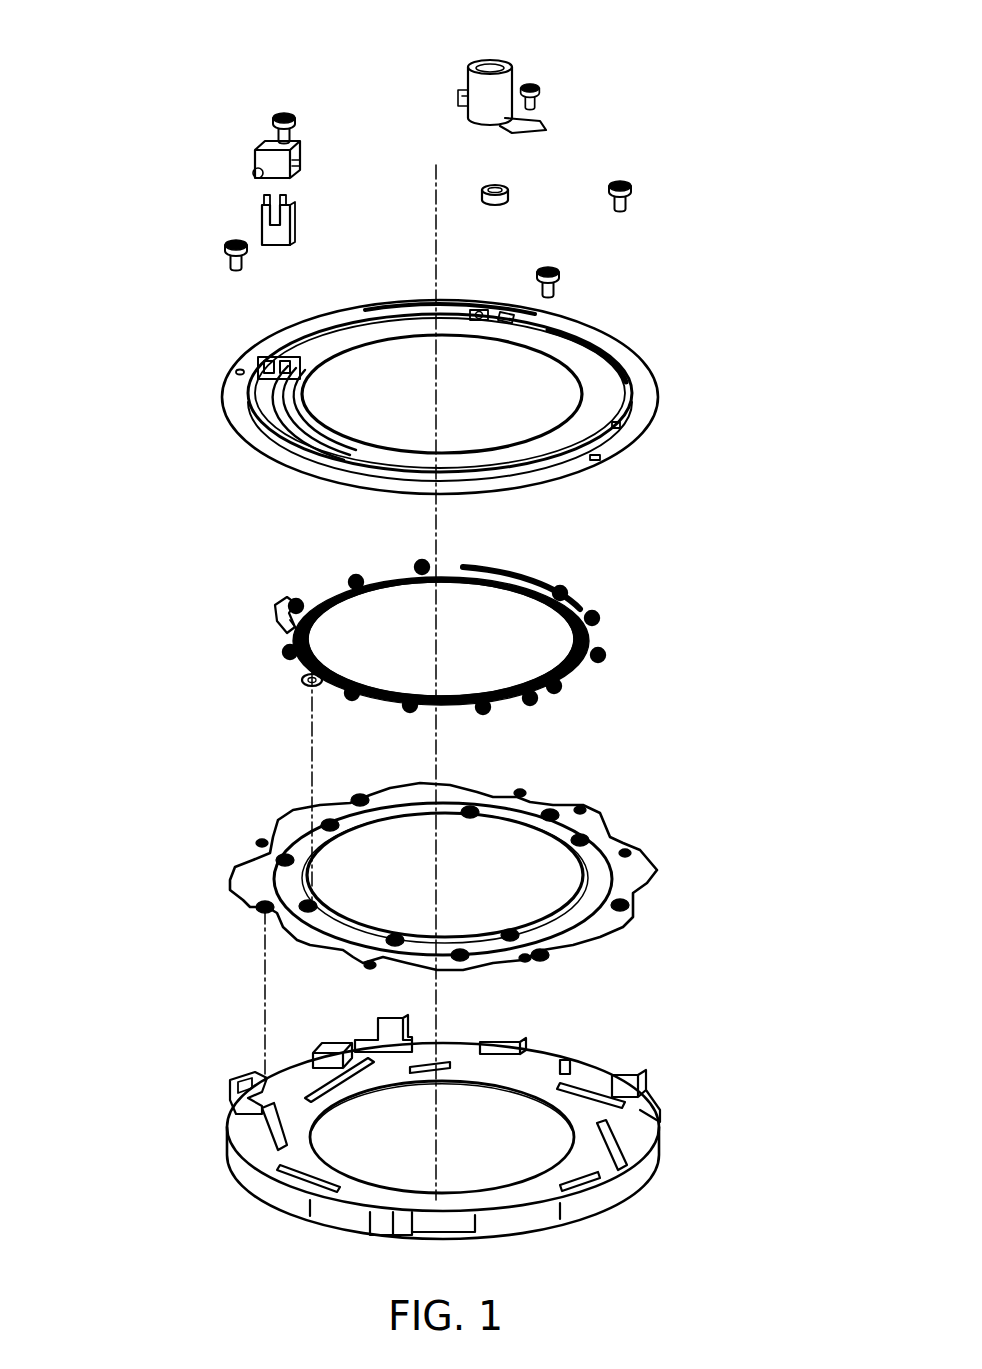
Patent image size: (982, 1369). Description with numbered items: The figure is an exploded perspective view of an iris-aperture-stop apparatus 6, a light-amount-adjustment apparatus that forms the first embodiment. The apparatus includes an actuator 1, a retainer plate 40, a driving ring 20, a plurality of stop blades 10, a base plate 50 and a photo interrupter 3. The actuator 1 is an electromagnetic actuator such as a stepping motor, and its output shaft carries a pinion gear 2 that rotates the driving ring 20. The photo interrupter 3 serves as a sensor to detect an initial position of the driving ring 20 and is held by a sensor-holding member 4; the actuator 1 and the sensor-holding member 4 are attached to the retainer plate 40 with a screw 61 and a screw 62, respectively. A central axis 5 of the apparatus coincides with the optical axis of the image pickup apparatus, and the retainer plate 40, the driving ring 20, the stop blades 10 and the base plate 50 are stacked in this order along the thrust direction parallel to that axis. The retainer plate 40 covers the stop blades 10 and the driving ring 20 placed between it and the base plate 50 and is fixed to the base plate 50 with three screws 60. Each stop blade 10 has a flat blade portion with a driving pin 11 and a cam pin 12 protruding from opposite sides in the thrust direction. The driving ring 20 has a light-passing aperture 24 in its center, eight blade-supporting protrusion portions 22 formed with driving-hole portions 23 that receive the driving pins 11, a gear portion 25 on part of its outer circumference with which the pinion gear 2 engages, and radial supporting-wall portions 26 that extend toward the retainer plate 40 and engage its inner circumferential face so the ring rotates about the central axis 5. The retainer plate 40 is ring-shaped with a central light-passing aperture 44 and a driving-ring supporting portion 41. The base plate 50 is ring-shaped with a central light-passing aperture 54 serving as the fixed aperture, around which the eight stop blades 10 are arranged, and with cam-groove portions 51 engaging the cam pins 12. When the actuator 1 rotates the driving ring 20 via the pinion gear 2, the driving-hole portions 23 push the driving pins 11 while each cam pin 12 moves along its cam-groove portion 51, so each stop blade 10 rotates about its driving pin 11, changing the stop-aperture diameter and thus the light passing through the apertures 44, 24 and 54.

The actuator 1 is at (490, 60).
The pinion gear 2 is at (500, 186).
The photo interrupter 3 is at (262, 213).
The sensor-holding member 4 is at (255, 152).
The central axis 5 is at (436, 165).
The iris-aperture-stop apparatus 6 is at (185, 277).
The stop blade 10 is at (402, 891).
The driving pin 11 is at (308, 906).
The cam pin 12 is at (258, 909).
The driving ring 20 is at (406, 630).
The blade-supporting protrusion portion 22 is at (307, 683).
The driving-hole portion 23 is at (305, 677).
The light-passing aperture 24 is at (480, 645).
The gear portion 25 is at (510, 565).
The radial supporting-wall portion 26 is at (553, 687).
The retainer plate 40 is at (438, 386).
The driving-ring supporting portion 41 is at (535, 330).
The light-passing aperture 44 is at (482, 398).
The base plate 50 is at (411, 1121).
The cam-groove portion 51 is at (268, 1133).
The light-passing aperture 54 is at (493, 1133).
The screws 60 is at (556, 276).
The screw 61 is at (540, 84).
The screw 62 is at (275, 112).